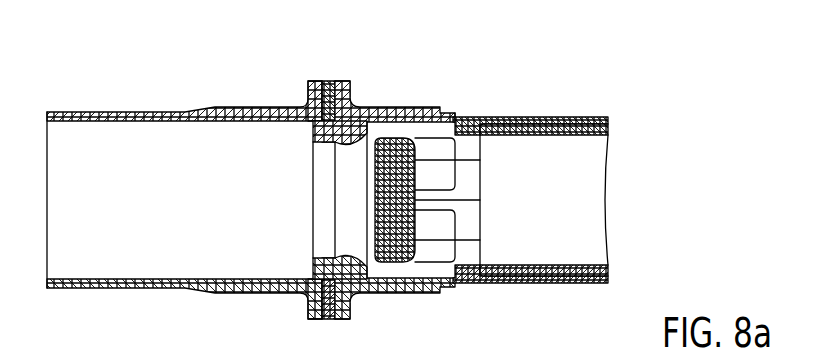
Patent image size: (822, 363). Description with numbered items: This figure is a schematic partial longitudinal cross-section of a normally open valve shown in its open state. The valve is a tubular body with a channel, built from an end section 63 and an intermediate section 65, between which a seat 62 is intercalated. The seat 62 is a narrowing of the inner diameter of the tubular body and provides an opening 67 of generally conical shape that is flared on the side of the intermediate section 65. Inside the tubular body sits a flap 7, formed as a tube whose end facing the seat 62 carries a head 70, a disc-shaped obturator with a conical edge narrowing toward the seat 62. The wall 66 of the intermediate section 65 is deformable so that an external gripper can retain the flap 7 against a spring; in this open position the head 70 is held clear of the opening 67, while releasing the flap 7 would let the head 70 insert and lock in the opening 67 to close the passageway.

The end section 63 is at (216, 111).
The seat 62 is at (326, 85).
The opening 67 is at (368, 137).
The head 70 is at (395, 243).
The wall 66 is at (533, 117).
The flap 7 is at (543, 271).
The intermediate section 65 is at (456, 108).